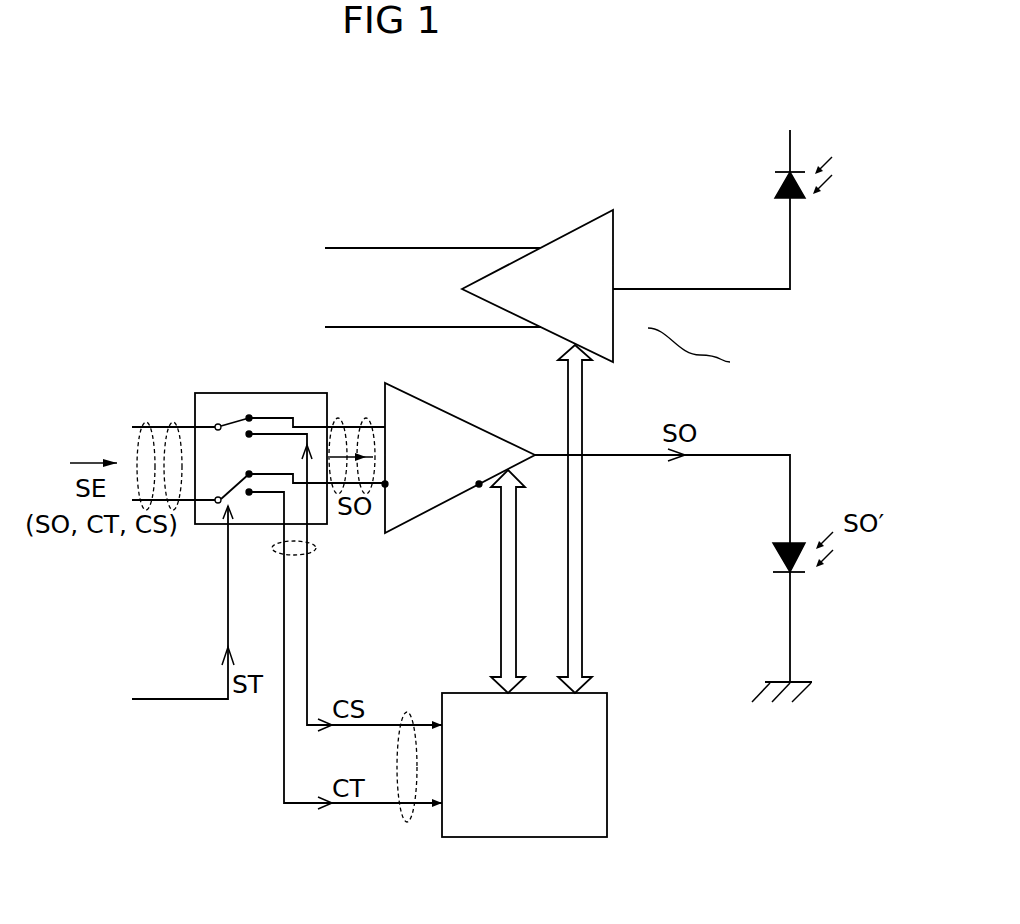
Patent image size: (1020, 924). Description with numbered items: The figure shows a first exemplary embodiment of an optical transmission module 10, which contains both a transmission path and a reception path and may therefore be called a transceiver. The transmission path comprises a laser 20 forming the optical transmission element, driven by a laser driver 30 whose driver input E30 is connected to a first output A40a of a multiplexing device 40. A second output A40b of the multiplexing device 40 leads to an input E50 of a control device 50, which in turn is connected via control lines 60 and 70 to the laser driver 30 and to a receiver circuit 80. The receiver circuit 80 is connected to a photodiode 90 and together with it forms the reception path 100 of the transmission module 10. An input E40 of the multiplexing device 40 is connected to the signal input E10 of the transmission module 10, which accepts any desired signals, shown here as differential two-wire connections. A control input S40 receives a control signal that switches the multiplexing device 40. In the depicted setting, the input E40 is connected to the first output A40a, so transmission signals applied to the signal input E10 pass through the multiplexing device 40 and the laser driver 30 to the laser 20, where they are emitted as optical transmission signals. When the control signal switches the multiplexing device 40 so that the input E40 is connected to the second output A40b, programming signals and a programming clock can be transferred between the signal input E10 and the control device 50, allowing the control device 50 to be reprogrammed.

The optical transmission module 10 is at (702, 192).
The laser 20 is at (819, 563).
The laser driver 30 is at (473, 422).
The multiplexing device 40 is at (228, 393).
The control device 50 is at (523, 820).
The control line 60 is at (510, 603).
The control line 70 is at (573, 553).
The receiver circuit 80 is at (563, 236).
The photodiode 90 is at (816, 193).
The reception path 100 is at (712, 354).
The signal input E10 is at (144, 422).
The input of the multiplexing device E40 is at (173, 420).
The driver input E30 is at (371, 420).
The input of the control device E50 is at (407, 822).
The first output of the multiplexing device A40a is at (339, 418).
The second output of the multiplexing device A40b is at (309, 553).
The control input S40 is at (227, 524).